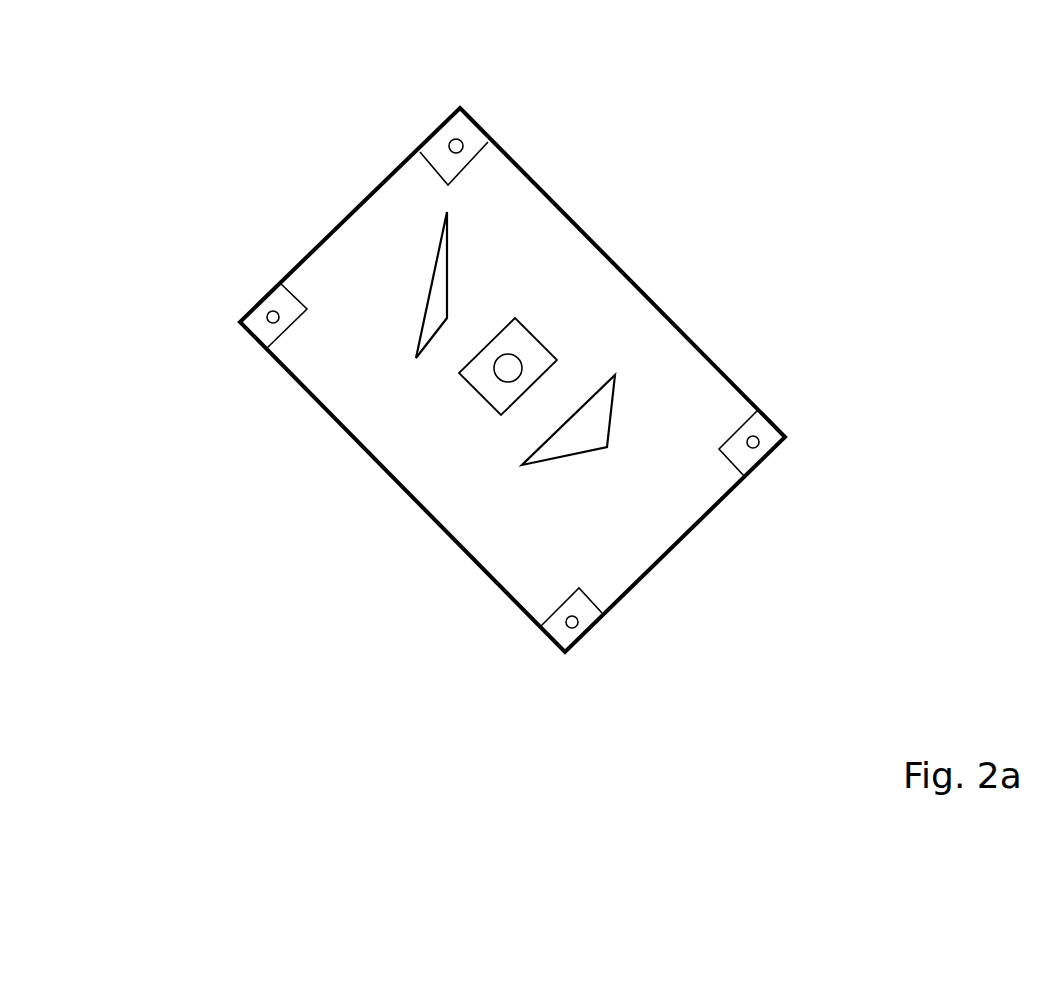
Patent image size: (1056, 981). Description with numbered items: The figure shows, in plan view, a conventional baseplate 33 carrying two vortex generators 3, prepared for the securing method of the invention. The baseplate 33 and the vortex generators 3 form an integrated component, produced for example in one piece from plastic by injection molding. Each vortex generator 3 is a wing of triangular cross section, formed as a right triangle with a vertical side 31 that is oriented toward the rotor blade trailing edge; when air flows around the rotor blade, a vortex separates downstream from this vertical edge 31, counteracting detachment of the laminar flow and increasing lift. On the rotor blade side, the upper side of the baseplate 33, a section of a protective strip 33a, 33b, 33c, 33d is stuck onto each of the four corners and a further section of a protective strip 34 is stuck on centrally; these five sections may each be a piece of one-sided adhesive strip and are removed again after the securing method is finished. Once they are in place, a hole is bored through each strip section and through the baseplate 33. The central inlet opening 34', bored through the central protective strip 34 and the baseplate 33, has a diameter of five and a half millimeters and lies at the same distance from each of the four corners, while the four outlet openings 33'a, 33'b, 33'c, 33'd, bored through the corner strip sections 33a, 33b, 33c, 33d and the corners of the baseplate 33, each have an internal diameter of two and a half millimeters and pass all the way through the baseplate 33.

The vortex generator 3 is at (595, 410).
The vertical side 31 is at (448, 248).
The baseplate 33 is at (512, 380).
The section of protective strip 33a is at (558, 623).
The section of protective strip 33b is at (255, 323).
The section of protective strip 33c is at (456, 122).
The section of protective strip 33d is at (757, 425).
The outlet opening 33'a is at (632, 676).
The outlet opening 33'b is at (218, 272).
The outlet opening 33'c is at (410, 102).
The outlet opening 33'd is at (818, 509).
The section of protective strip 34 is at (583, 290).
The inlet opening 34' is at (416, 457).